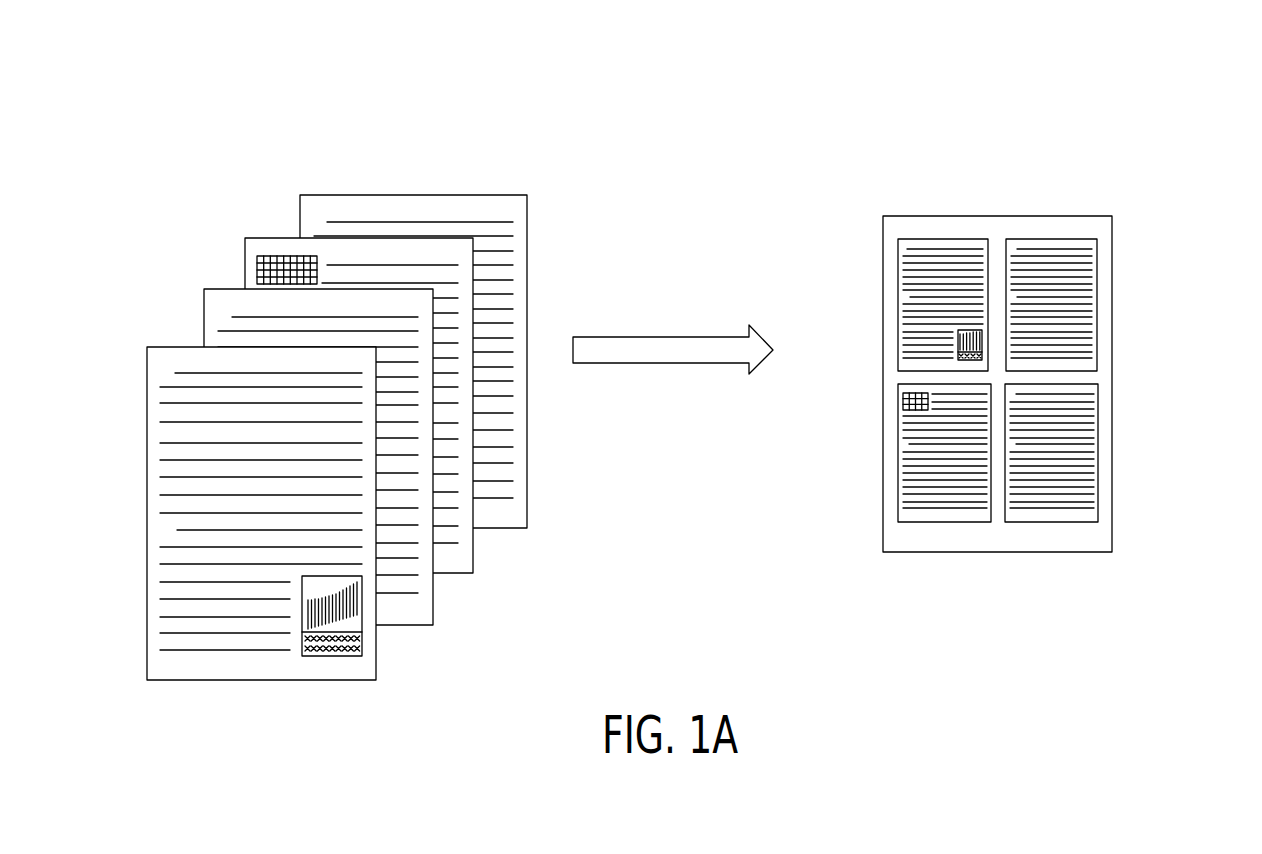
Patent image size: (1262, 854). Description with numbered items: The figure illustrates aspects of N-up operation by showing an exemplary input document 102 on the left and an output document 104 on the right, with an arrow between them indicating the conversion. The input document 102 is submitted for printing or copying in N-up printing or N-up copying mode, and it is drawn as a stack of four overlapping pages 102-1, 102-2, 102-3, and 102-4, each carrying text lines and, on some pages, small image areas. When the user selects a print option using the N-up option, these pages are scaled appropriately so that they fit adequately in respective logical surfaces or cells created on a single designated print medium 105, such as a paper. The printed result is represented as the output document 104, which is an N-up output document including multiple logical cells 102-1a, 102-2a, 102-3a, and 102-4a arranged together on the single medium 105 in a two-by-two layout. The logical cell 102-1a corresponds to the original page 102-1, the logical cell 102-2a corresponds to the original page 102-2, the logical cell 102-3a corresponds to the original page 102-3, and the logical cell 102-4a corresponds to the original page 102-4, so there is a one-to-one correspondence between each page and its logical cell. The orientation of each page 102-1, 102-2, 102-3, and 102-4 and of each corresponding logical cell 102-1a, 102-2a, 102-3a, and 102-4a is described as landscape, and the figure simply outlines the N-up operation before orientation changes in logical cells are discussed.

The input document 102 is at (465, 123).
The first page 102-1 is at (147, 347).
The second page 102-2 is at (204, 289).
The third page 102-3 is at (245, 238).
The fourth page 102-4 is at (300, 195).
The output document 104 is at (918, 216).
The single print medium 105 is at (903, 552).
The first logical cell 102-1a is at (898, 298).
The second logical cell 102-2a is at (1097, 302).
The third logical cell 102-3a is at (898, 438).
The fourth logical cell 102-4a is at (1098, 442).